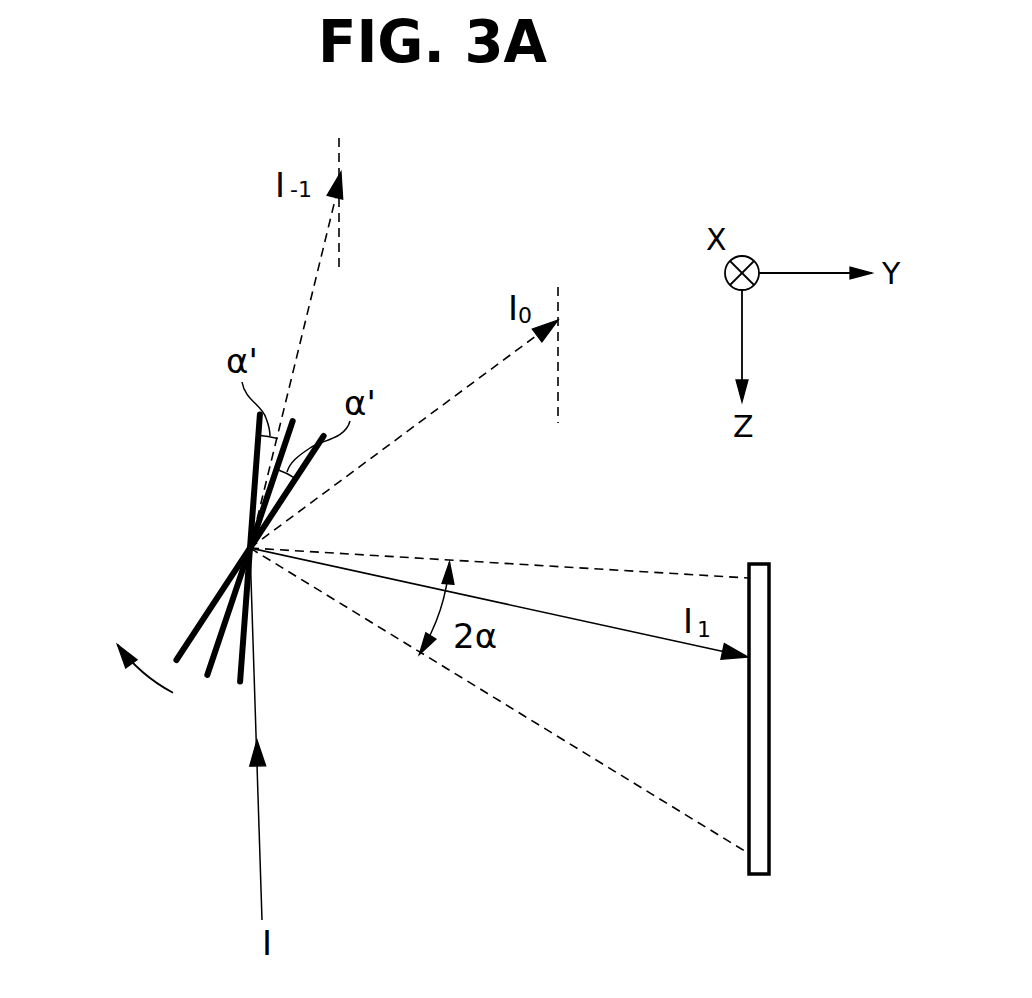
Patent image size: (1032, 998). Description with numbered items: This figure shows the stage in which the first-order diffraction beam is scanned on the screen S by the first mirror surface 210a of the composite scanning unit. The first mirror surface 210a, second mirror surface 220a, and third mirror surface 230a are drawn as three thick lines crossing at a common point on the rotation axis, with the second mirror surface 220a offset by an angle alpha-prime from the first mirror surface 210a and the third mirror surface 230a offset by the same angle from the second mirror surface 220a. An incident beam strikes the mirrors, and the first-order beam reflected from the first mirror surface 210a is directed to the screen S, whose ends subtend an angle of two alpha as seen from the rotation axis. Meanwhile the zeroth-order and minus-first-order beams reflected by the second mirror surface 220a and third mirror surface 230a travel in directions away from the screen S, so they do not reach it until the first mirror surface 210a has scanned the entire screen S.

The first mirror surface 210a is at (193, 622).
The second mirror surface 220a is at (205, 657).
The third mirror surface 230a is at (240, 647).
The screen S is at (760, 612).